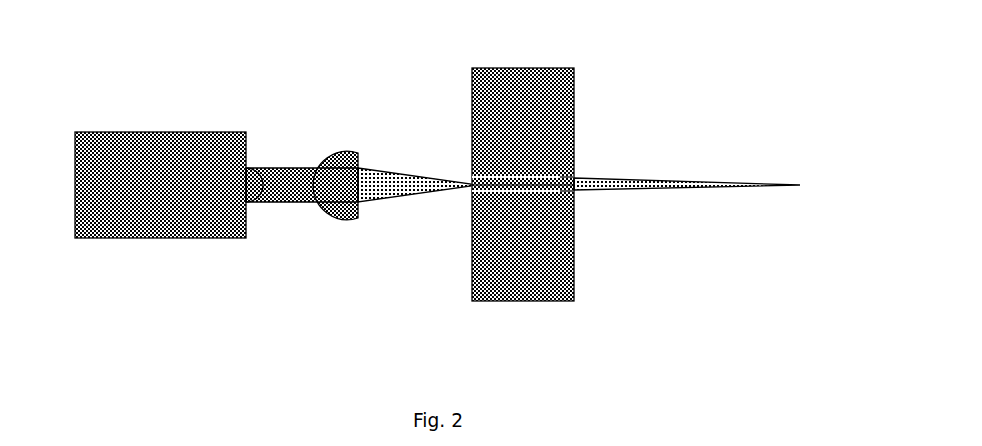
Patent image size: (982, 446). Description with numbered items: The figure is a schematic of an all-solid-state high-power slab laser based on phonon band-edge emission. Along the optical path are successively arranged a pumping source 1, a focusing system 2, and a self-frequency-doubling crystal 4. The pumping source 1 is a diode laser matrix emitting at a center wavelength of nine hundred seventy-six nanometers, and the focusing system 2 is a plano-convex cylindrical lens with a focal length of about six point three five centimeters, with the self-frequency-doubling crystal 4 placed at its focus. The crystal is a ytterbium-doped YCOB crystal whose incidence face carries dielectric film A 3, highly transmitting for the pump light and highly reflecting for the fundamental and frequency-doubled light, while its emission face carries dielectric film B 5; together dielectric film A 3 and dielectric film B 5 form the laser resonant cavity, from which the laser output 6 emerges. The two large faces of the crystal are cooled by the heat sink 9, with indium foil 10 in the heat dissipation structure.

The pumping source 1 is at (160, 154).
The focusing system 2 is at (302, 150).
The dielectric film A 3 is at (414, 142).
The self-frequency-doubling crystal 4 is at (472, 217).
The dielectric film B 5 is at (613, 148).
The laser output 6 is at (687, 148).
The heat sink 9 is at (552, 172).
The indium foil 10 is at (558, 191).